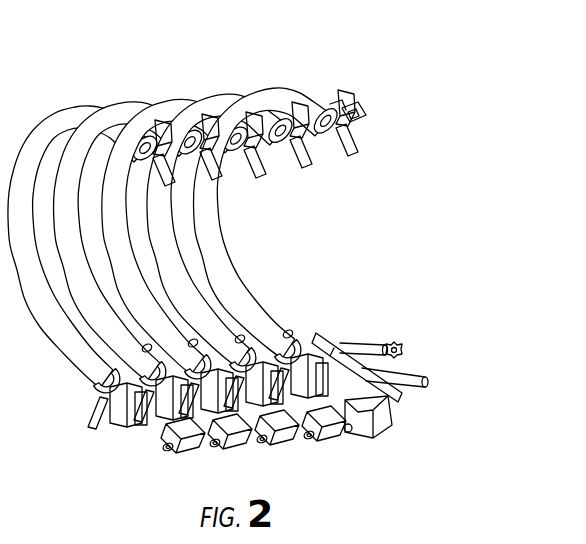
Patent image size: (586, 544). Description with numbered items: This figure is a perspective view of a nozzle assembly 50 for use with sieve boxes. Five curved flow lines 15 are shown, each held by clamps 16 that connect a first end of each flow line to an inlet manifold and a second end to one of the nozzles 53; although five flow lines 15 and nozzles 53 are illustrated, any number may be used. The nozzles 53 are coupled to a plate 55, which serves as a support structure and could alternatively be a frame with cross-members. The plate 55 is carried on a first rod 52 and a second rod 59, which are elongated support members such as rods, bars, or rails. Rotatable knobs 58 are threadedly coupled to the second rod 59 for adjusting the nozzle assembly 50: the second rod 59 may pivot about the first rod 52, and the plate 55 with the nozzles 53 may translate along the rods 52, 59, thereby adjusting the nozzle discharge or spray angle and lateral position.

The flow lines 15 is at (263, 95).
The clamps 16 is at (357, 108).
The nozzle assembly 50 is at (334, 455).
The first rod 52 is at (432, 378).
The nozzles 53 is at (387, 427).
The plate 55 is at (400, 400).
The knobs 58 is at (402, 350).
The second rod 59 is at (372, 348).